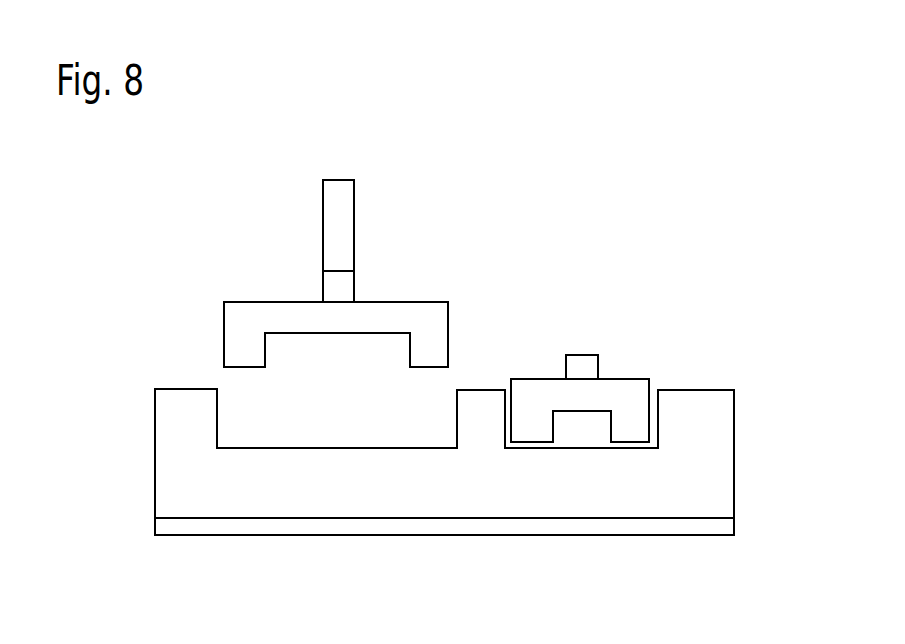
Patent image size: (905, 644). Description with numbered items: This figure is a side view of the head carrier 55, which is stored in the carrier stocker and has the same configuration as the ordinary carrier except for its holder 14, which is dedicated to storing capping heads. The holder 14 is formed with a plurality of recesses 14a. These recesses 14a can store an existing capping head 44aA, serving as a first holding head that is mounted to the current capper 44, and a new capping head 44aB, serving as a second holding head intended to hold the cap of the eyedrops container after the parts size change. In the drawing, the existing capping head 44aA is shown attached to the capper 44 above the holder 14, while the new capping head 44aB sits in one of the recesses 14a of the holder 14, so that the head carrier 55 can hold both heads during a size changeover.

The holder 14 is at (737, 440).
The recess 14a is at (305, 446).
The capper 44 is at (358, 197).
The existing capping head 44aA is at (403, 302).
The new capping head 44aB is at (633, 378).
The head carrier 55 is at (727, 388).